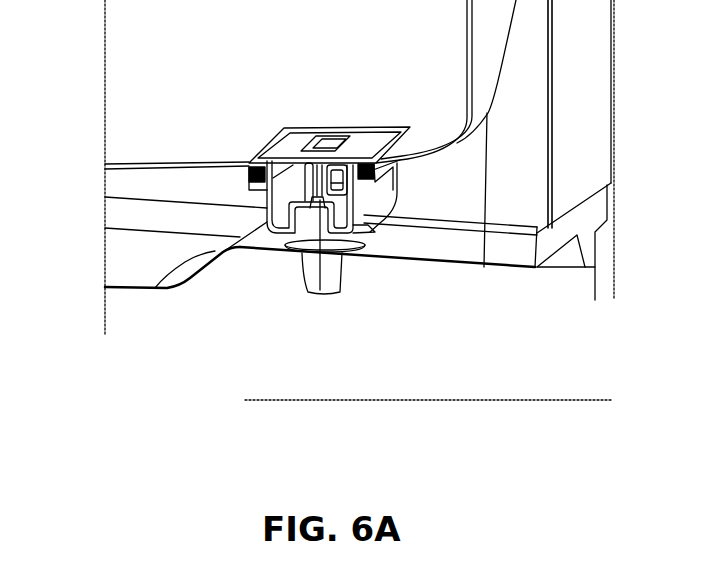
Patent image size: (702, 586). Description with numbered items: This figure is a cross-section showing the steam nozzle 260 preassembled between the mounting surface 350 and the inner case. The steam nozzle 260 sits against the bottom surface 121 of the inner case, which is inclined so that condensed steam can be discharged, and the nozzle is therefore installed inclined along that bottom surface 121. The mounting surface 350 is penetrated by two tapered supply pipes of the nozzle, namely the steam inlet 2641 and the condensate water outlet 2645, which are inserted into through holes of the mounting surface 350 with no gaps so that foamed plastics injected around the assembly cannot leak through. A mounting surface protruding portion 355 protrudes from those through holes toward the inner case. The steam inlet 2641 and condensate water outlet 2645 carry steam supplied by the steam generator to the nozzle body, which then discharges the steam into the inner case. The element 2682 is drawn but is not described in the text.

The bottom surface 121 is at (150, 146).
The steam nozzle 260 is at (236, 130).
The condensate water outlet 2645 is at (333, 287).
The steam inlet 2641 is at (355, 263).
The pin 2682 is at (318, 292).
The mounting surface protruding portion 355 is at (484, 267).
The mounting surface 350 is at (500, 267).